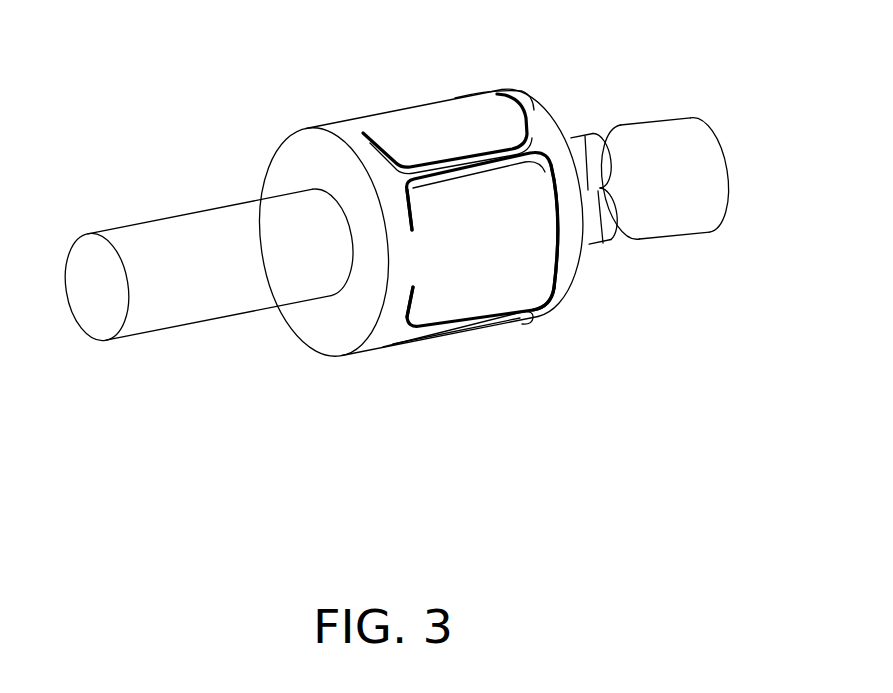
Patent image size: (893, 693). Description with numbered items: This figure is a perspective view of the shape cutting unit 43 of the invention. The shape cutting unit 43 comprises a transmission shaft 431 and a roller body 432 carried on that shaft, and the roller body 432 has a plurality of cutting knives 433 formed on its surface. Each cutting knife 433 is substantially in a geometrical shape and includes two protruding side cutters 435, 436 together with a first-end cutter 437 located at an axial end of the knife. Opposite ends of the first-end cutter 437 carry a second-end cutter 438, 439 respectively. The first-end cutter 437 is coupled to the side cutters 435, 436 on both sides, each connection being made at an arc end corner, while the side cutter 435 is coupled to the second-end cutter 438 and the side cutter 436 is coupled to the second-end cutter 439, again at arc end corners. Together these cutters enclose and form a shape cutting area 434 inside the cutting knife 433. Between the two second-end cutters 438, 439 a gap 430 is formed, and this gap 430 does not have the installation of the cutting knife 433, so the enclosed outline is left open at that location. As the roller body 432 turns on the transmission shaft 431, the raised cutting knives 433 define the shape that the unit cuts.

The shape cutting unit 43 is at (370, 102).
The gap 430 is at (412, 258).
The transmission shaft 431 is at (207, 225).
The roller body 432 is at (570, 272).
The cutting knife 433 is at (552, 290).
The shape cutting area 434 is at (492, 295).
The side cutter 435 is at (517, 160).
The side cutter 436 is at (452, 326).
The first-end cutter 437 is at (563, 243).
The second-end cutter 438 is at (415, 214).
The second-end cutter 439 is at (418, 302).